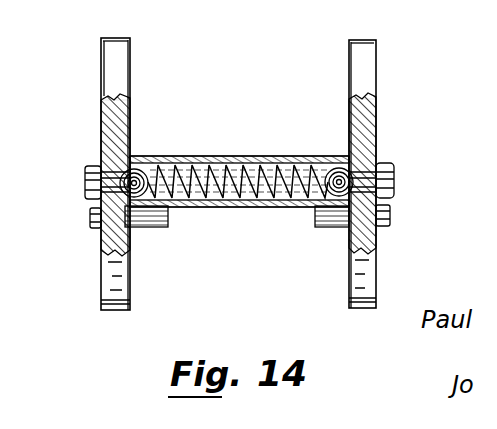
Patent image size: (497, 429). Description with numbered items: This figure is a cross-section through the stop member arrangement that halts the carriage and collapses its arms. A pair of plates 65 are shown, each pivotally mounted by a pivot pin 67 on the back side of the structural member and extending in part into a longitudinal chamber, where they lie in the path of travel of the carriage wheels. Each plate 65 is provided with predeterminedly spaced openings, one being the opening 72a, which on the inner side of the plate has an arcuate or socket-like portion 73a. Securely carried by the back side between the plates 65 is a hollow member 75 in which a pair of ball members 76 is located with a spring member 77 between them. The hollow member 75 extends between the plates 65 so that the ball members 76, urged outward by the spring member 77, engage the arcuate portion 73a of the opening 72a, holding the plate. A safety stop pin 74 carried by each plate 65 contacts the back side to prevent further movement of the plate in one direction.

The plate 65 is at (101, 56).
The pivot pin 67 is at (85, 168).
The opening 72a is at (112, 181).
The arcuate portion 73a is at (120, 205).
The safety stop pin 74 is at (90, 217).
The hollow member 75 is at (268, 158).
The ball member 76 is at (141, 160).
The spring member 77 is at (228, 162).